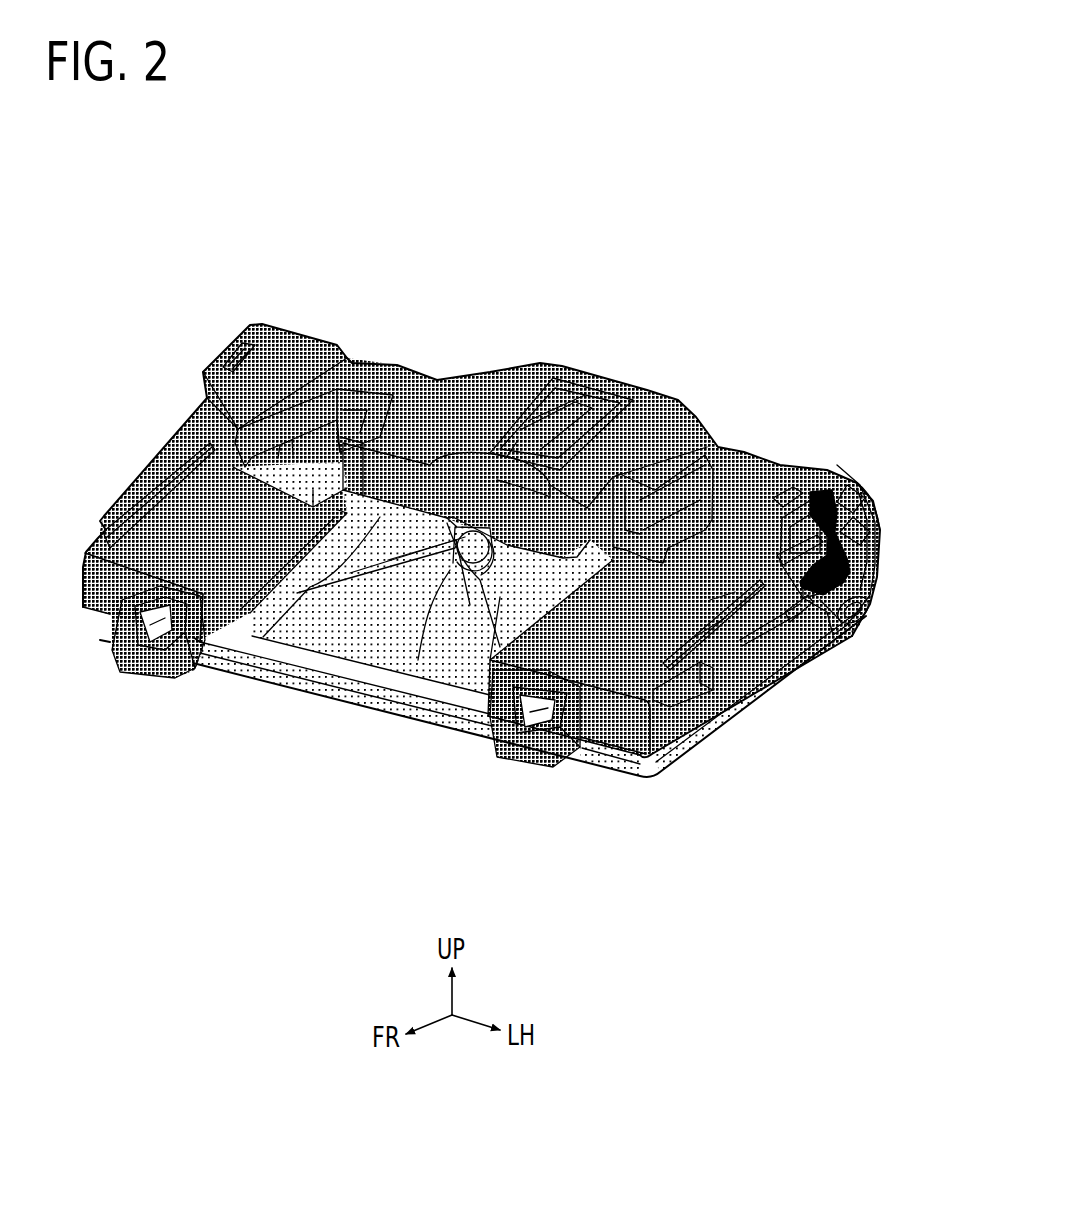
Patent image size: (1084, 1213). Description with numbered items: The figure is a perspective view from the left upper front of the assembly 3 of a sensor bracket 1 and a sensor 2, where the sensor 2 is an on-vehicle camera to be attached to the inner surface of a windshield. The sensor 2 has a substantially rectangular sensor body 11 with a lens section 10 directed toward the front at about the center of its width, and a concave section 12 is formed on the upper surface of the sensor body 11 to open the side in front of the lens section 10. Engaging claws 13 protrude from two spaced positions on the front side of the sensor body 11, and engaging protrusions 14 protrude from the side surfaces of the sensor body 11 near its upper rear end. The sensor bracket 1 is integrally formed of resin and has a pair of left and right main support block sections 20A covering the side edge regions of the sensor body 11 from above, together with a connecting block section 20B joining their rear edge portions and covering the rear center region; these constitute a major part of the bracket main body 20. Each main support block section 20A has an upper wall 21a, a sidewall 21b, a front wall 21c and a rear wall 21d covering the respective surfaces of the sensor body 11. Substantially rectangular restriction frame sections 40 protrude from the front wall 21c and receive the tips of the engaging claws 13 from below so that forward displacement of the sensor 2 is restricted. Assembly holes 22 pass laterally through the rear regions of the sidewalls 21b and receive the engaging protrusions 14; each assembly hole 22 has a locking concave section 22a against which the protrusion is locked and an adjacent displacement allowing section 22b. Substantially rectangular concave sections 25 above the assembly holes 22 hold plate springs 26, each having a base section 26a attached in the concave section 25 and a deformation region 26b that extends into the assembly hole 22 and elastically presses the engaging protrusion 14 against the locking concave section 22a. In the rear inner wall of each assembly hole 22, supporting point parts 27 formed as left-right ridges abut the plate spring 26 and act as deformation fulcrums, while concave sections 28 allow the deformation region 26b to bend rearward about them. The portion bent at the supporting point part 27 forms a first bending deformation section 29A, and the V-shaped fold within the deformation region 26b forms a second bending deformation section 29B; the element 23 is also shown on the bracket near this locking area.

The sensor bracket 1 is at (699, 415).
The sensor 2 is at (374, 716).
The assembly 3 is at (582, 240).
The lens section 10 is at (477, 555).
The sensor body 11 is at (243, 667).
The concave section 12 is at (340, 597).
The engaging claws 13 is at (140, 633).
The engaging protrusions 14 is at (810, 603).
The bracket main body 20 is at (456, 573).
The main support block sections 20A is at (177, 498).
The connecting block section 20B is at (490, 400).
The upper wall 21a is at (170, 525).
The sidewall 21b is at (760, 627).
The front wall 21c is at (97, 600).
The rear wall 21d is at (880, 517).
The assembly holes 22 is at (870, 618).
The locking concave section 22a is at (823, 607).
The displacement allowing section 22b is at (860, 563).
The pin 23 is at (843, 603).
The concave sections 25 is at (813, 503).
The plate springs 26 is at (850, 483).
The base sections 26a is at (830, 493).
The deformation regions 26b is at (860, 553).
The supporting point parts 27 is at (797, 530).
The concave sections 28 is at (847, 537).
The first bending deformation sections 29A is at (873, 510).
The second bending deformation sections 29B is at (857, 567).
The restriction frame sections 40 is at (140, 660).